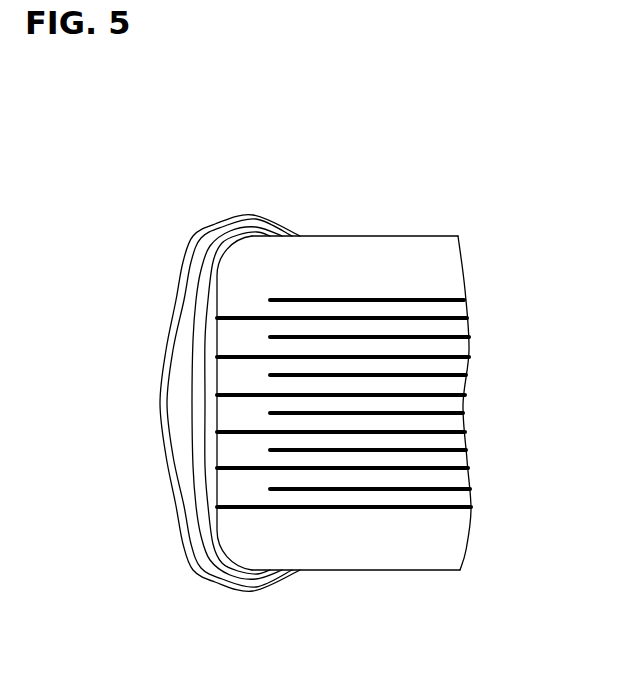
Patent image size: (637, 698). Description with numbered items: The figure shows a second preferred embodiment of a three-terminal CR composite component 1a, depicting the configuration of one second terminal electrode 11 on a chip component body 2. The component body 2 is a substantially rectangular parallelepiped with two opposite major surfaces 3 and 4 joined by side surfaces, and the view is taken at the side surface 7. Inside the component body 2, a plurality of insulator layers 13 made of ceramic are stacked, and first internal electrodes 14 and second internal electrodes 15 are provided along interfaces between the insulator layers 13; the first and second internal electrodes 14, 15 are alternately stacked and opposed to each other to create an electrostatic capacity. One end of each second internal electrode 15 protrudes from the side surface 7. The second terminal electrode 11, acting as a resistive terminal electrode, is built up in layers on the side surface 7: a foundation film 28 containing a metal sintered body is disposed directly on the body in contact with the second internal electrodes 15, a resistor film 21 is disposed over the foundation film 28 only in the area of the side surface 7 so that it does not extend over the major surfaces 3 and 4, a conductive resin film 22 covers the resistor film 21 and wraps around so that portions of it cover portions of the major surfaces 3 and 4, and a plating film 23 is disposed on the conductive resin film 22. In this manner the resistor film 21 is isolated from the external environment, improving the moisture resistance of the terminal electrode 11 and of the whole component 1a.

The three-terminal CR composite component 1a is at (164, 95).
The component body 2 is at (418, 224).
The major surface 3 is at (370, 235).
The major surface 4 is at (413, 570).
The side surface 7 is at (216, 368).
The second terminal electrode 11 is at (175, 273).
The insulator layers 13 is at (412, 443).
The first internal electrode 14 is at (334, 323).
The second internal electrode 15 is at (353, 483).
The resistor film 21 is at (197, 480).
The conductive resin film 22 is at (180, 402).
The plating film 23 is at (175, 318).
The foundation film 28 is at (211, 434).